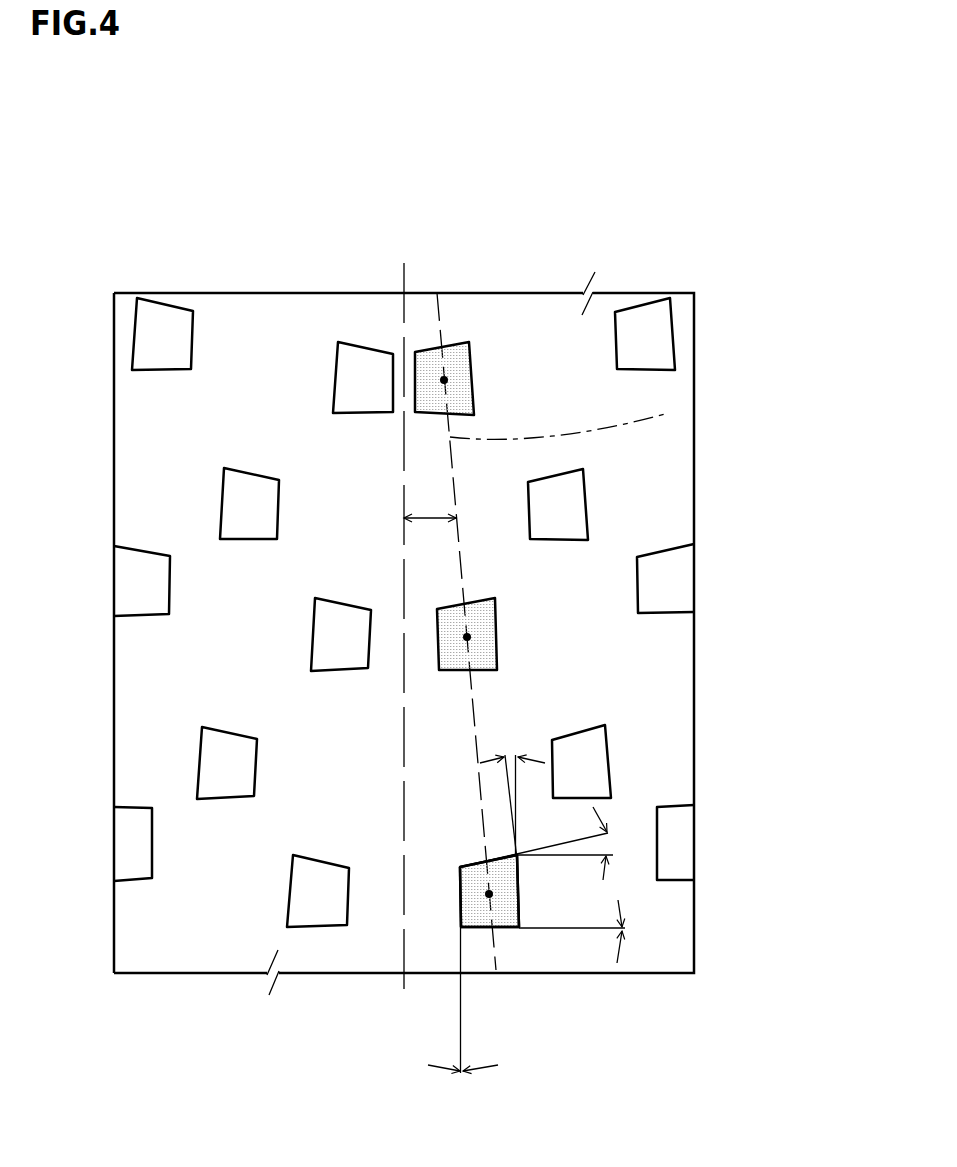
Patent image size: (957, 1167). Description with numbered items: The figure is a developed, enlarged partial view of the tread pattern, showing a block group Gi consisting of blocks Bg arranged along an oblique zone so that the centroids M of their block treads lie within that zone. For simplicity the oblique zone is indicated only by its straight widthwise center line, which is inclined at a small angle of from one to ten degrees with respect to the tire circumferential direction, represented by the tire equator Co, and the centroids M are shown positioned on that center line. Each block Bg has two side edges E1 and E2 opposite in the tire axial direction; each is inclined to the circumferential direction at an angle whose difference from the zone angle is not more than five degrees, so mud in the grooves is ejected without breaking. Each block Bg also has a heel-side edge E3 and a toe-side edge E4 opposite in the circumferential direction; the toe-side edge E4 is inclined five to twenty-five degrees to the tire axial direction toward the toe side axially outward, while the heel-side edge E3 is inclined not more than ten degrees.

The block group Gi is at (423, 322).
The block Bg is at (457, 340).
The centroid M is at (447, 380).
The tire equator Co is at (407, 648).
The side edge E1 is at (460, 897).
The side edge E2 is at (520, 892).
The heel-side edge E3 is at (507, 928).
The toe-side edge E4 is at (500, 855).